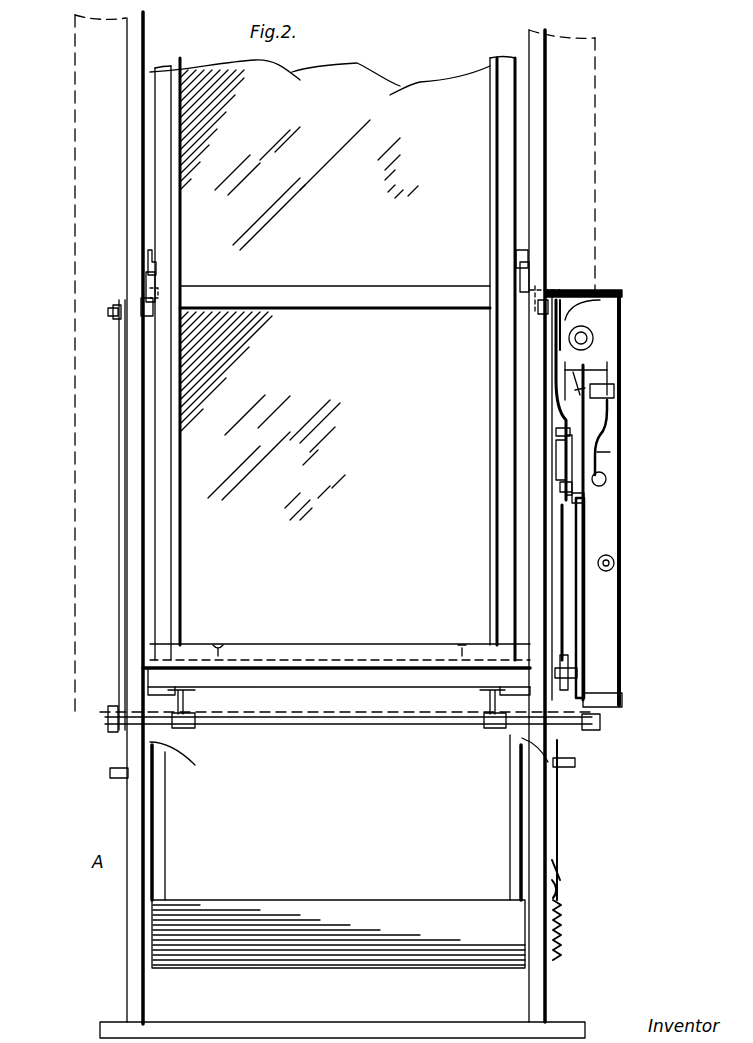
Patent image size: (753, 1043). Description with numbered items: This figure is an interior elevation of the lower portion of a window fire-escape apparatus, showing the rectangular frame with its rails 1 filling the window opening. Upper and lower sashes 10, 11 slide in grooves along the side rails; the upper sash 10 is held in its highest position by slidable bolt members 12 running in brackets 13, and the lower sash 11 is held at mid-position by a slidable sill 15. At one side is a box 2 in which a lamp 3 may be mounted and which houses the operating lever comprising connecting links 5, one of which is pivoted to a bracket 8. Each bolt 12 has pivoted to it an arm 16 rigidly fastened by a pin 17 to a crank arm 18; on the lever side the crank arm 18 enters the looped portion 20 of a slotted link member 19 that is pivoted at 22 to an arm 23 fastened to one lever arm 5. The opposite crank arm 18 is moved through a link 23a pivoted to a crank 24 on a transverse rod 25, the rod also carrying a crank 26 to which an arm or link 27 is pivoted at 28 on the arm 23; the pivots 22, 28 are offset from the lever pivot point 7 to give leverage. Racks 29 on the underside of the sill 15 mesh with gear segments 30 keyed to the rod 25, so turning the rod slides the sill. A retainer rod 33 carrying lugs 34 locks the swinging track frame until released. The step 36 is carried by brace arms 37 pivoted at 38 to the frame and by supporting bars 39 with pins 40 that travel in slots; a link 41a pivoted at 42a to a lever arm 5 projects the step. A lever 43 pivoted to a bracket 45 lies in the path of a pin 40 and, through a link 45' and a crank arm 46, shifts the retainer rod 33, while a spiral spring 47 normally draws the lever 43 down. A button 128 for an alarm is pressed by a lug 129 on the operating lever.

The rails 1 is at (575, 138).
The box 2 is at (621, 540).
The lamp 3 is at (594, 338).
The connecting links 5 is at (599, 456).
The pivot point 7 is at (565, 488).
The bracket 8 is at (606, 478).
The upper sash 10 is at (299, 160).
The lower sash 11 is at (52, 262).
The slidable bolt members 12 is at (149, 280).
The brackets 13 is at (147, 303).
The slidable sill 15 is at (325, 676).
The arm 16 is at (160, 300).
The pin 17 is at (120, 318).
The crank arm 18 is at (115, 307).
The link member 19 is at (560, 392).
The looped portion 20 is at (565, 325).
The pivot 22 is at (605, 428).
The arm 23 is at (560, 466).
The link or arm 23a is at (118, 512).
The crank 24 is at (113, 734).
The transverse rod 25 is at (335, 726).
The crank 26 is at (600, 722).
The arm or link 27 is at (586, 640).
The pivot 28 is at (576, 500).
The racks 29 is at (190, 696).
The gear segments 30 is at (200, 728).
The retainer member or rod 33 is at (564, 655).
The lugs 34 is at (222, 648).
The step 36 is at (338, 934).
The brace arms 37 is at (155, 855).
The pivot 38 is at (512, 748).
The supporting arms or bars 39 is at (167, 815).
The pins 40 is at (118, 778).
The arm or link 41a is at (560, 566).
The pivot 42a is at (565, 445).
The lever 43 is at (558, 875).
The bracket 45 is at (582, 887).
The link or arm 45' is at (584, 820).
The crank arm 46 is at (576, 675).
The spiral spring 47 is at (563, 935).
The button 128 is at (616, 563).
The lug 129 is at (615, 392).